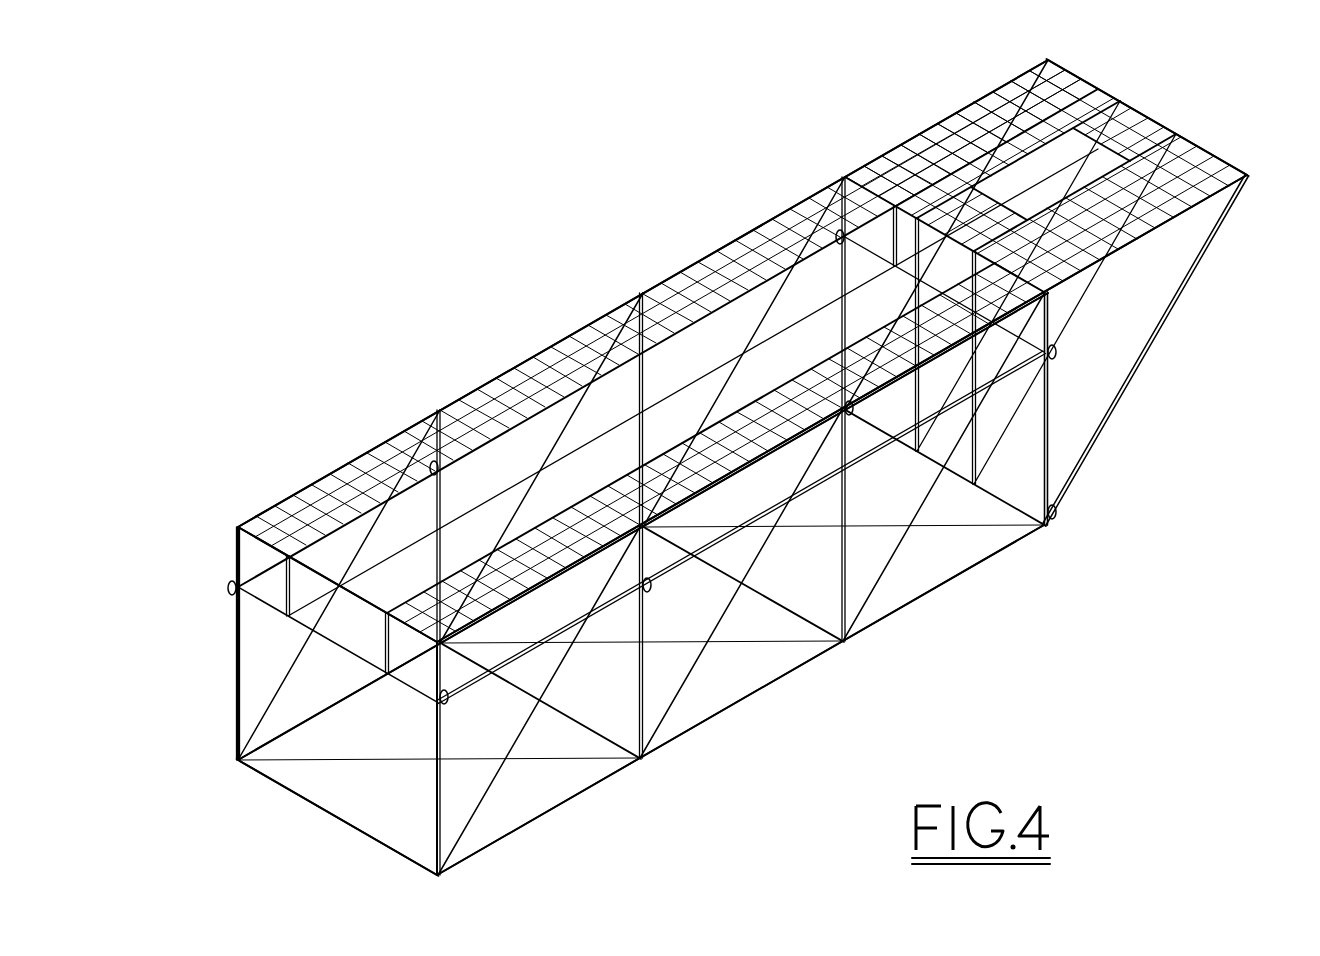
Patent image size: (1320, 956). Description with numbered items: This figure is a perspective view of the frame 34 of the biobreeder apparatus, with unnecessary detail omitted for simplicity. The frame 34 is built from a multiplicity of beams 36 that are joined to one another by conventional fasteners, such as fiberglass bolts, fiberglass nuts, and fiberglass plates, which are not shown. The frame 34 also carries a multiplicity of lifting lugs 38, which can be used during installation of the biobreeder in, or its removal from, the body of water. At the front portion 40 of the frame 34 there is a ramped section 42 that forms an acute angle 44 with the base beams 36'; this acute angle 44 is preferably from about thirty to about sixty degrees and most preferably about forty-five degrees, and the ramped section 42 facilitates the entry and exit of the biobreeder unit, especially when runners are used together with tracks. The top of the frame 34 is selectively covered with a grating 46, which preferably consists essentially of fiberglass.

The frame 34 is at (580, 184).
The beams 36 is at (719, 467).
The base beams 36' is at (643, 467).
The lifting lugs 38 is at (432, 465).
The front portion 40 is at (981, 92).
The ramped section 42 is at (1186, 288).
The acute angle 44 is at (1068, 468).
The grating 46 is at (532, 372).